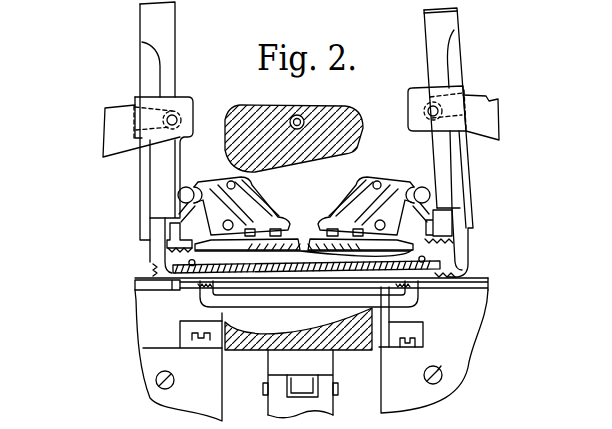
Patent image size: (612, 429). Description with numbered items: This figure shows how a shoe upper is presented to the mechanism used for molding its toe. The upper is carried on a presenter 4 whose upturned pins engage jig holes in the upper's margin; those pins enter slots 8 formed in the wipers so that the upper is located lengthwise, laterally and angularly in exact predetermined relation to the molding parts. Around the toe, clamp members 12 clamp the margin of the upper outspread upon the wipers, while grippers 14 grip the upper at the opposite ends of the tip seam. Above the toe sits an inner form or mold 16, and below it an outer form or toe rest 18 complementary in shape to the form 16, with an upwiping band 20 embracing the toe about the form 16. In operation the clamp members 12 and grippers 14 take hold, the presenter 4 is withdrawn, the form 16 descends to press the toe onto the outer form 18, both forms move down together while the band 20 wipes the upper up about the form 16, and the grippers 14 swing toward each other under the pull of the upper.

The presenter 4 is at (423, 303).
The slots 8 is at (182, 289).
The clamp members 12 is at (313, 238).
The grippers 14 is at (155, 268).
The inner form 16 is at (343, 106).
The outer form 18 is at (272, 335).
The upwiping band 20 is at (222, 316).